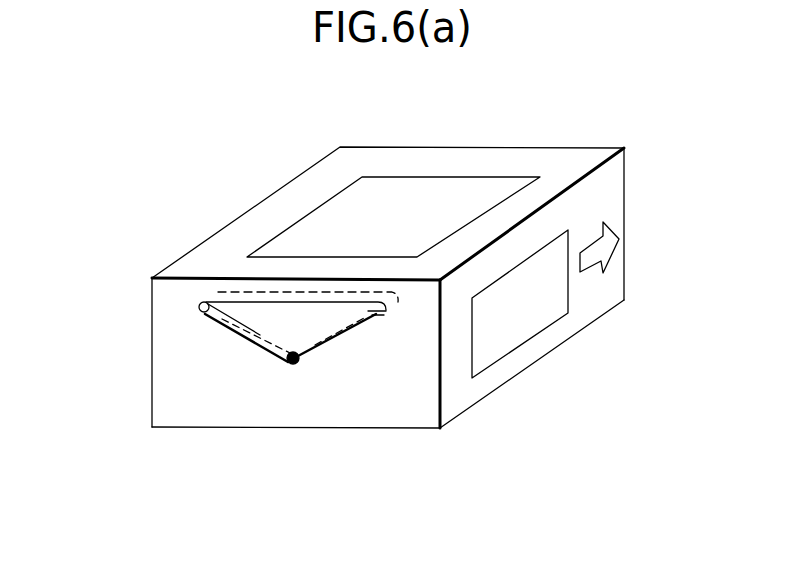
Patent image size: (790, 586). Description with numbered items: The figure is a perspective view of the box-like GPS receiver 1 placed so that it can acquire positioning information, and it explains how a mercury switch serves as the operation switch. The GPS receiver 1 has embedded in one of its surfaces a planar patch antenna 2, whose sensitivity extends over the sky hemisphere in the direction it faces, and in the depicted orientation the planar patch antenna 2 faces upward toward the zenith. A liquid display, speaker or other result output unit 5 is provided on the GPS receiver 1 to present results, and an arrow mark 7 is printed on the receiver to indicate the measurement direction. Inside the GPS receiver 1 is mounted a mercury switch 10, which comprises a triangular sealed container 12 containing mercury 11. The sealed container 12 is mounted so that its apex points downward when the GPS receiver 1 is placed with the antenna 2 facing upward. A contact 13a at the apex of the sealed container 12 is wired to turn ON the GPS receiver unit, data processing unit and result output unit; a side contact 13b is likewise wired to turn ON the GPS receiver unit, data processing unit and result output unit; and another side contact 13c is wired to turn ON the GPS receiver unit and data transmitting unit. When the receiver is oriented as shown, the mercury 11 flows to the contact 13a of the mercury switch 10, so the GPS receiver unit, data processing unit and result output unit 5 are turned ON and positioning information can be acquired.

The GPS receiver 1 is at (566, 160).
The planar patch antenna 2 is at (386, 185).
The result output unit 5 is at (547, 310).
The arrow (mark) 7 is at (606, 248).
The mercury switch 10 is at (261, 385).
The mercury 11 is at (301, 359).
The sealed container 12 is at (227, 331).
The contact 13a is at (285, 363).
The side contact 13b is at (198, 315).
The side contact 13c is at (375, 320).